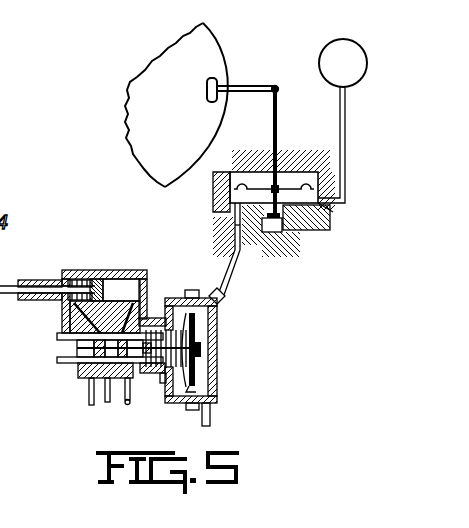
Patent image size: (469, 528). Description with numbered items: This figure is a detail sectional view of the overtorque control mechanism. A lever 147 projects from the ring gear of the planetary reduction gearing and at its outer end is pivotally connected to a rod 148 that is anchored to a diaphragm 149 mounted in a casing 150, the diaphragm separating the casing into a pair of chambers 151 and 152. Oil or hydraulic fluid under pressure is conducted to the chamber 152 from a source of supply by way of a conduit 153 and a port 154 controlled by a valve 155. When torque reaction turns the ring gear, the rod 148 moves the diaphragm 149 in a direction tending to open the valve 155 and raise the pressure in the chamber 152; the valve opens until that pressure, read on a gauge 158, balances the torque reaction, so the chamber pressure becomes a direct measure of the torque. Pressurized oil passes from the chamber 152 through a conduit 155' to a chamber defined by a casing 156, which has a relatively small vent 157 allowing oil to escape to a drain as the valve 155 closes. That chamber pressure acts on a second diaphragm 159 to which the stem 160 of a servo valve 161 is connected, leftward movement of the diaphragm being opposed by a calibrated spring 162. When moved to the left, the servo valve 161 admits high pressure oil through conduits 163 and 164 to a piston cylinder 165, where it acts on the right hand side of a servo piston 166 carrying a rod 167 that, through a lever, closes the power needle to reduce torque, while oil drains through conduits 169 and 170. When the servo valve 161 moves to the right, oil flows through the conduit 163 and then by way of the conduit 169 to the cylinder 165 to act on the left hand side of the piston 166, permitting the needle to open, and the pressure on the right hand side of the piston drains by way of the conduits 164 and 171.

The lever 147 is at (248, 88).
The rod 148 is at (279, 118).
The diaphragm 149 is at (303, 172).
The casing 150 is at (316, 210).
The chamber 151 is at (253, 178).
The chamber 152 is at (228, 195).
The conduit 153 is at (297, 233).
The port 154 is at (263, 215).
The valve 155 is at (283, 265).
The conduit 155' is at (210, 243).
The casing 156 is at (214, 353).
The vent 157 is at (218, 396).
The gauge 158 is at (333, 41).
The diaphragm 159 is at (193, 386).
The stem 160 is at (158, 320).
The servo valve 161 is at (76, 350).
The calibrated spring 162 is at (163, 383).
The conduit 163 is at (106, 404).
The conduit 164 is at (128, 325).
The piston cylinder 165 is at (100, 306).
The servo piston 166 is at (97, 280).
The rod 167 is at (4, 286).
The conduit 169 is at (72, 315).
The conduit 170 is at (88, 389).
The conduit 171 is at (127, 404).